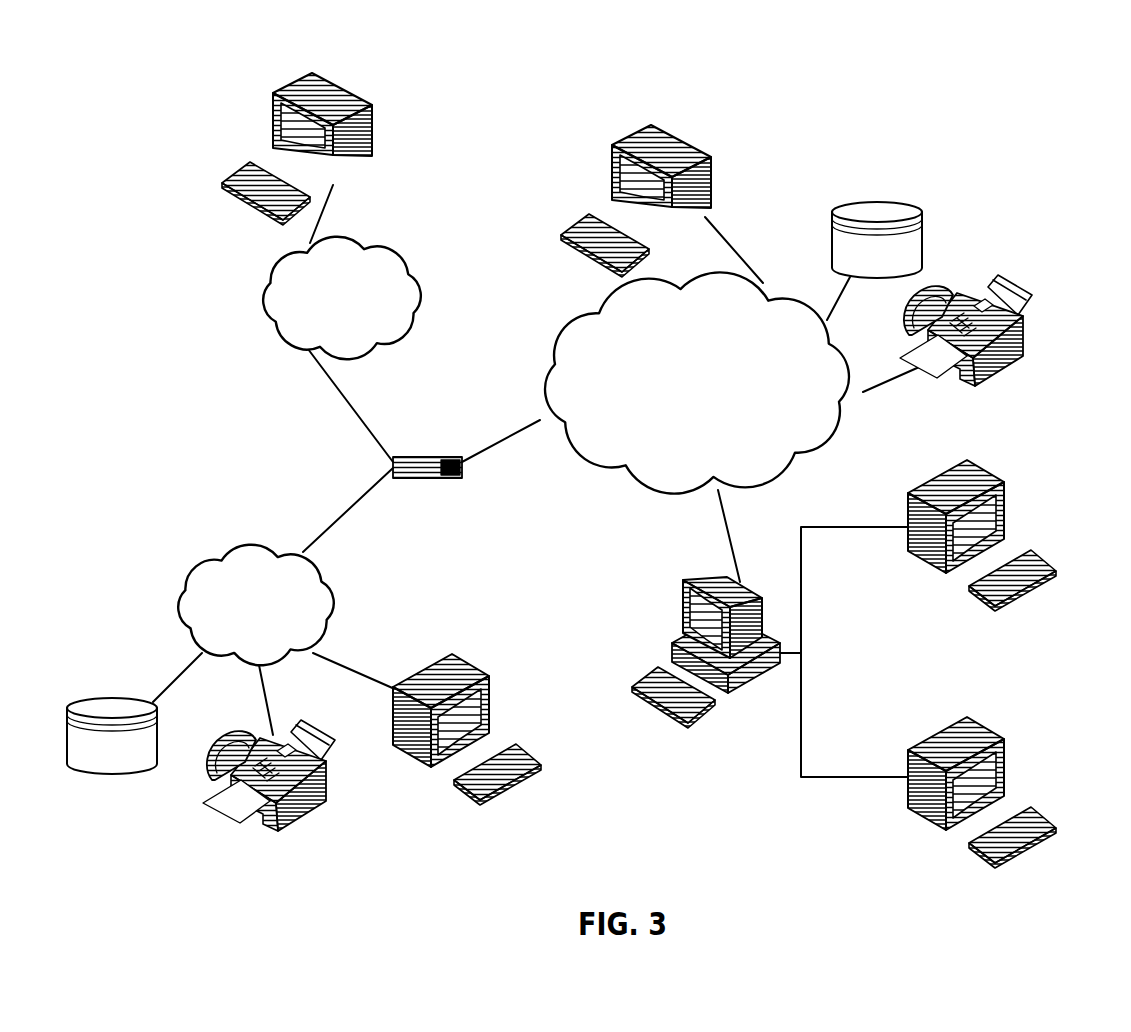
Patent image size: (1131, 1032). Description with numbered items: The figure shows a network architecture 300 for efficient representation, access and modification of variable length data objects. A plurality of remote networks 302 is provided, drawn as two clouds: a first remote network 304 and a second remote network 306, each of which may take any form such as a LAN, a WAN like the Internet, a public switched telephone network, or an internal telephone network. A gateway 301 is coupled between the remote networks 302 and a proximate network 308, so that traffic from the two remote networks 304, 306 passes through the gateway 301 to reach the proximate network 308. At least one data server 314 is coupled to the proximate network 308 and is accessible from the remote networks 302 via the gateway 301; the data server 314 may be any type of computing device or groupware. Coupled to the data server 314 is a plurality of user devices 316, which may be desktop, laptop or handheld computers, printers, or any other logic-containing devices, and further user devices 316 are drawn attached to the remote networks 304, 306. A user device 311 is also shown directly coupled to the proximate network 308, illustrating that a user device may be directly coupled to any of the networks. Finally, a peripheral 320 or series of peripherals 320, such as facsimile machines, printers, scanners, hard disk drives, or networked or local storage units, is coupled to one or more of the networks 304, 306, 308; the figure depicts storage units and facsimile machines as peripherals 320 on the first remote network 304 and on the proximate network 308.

The network architecture 300 is at (623, 41).
The gateway 301 is at (436, 455).
The remote networks 302 is at (243, 381).
The first remote network 304 is at (172, 578).
The second remote network 306 is at (430, 302).
The proximate network 308 is at (830, 446).
The user device 311 is at (708, 192).
The data server 314 is at (683, 607).
The user devices 316 is at (372, 137).
The peripheral 320 is at (872, 200).